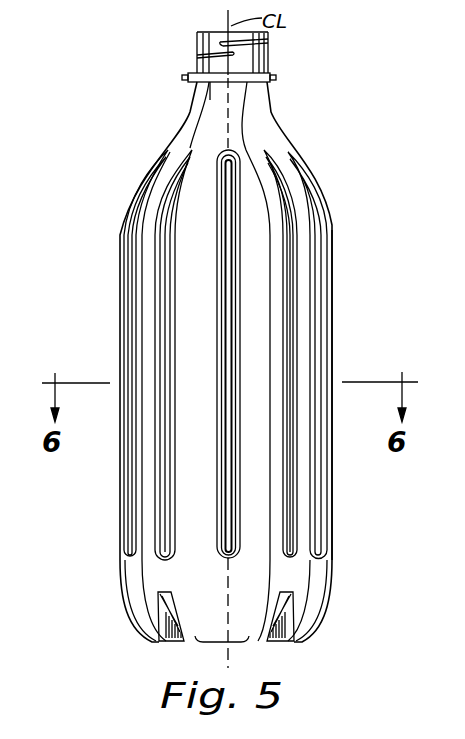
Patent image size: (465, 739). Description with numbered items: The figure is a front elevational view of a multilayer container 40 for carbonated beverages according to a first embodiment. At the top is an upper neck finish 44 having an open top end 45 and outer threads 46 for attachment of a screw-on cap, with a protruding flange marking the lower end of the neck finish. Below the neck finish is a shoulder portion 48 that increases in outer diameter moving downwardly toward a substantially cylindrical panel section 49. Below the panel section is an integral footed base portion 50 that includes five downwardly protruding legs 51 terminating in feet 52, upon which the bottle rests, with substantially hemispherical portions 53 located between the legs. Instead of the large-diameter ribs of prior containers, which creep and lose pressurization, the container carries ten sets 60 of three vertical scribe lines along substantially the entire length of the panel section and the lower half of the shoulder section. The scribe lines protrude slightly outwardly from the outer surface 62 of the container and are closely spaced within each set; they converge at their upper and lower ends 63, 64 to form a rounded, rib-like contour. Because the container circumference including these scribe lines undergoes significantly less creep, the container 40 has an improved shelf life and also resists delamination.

The container 40 is at (341, 185).
The upper neck finish 44 is at (268, 53).
The open top end 45 is at (220, 31).
The outer threads 46 is at (197, 55).
The shoulder portion 48 is at (282, 135).
The panel section 49 is at (333, 256).
The footed base portion 50 is at (315, 630).
The legs 51 is at (197, 641).
The feet 52 is at (297, 642).
The hemispherical portions 53 is at (283, 595).
The sets of vertical scribe lines 60 is at (211, 338).
The outer surface 62 is at (333, 306).
The upper ends of scribe lines 63 is at (193, 147).
The lower ends of scribe lines 64 is at (167, 557).